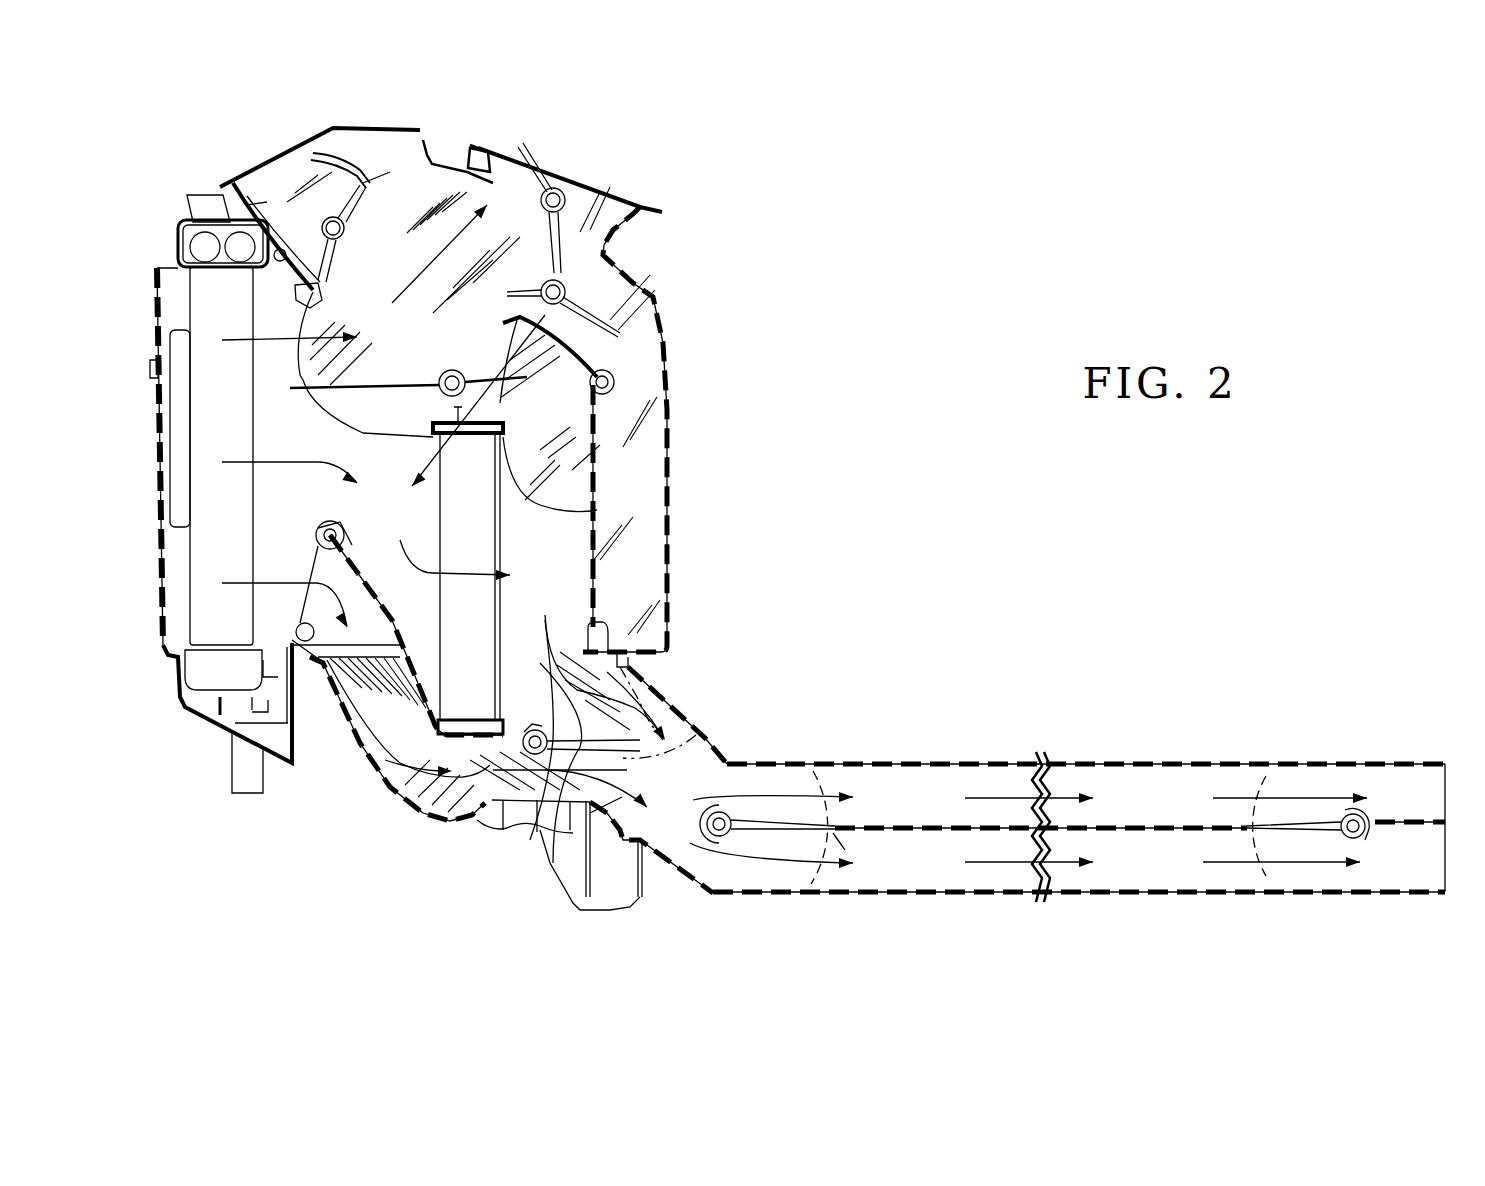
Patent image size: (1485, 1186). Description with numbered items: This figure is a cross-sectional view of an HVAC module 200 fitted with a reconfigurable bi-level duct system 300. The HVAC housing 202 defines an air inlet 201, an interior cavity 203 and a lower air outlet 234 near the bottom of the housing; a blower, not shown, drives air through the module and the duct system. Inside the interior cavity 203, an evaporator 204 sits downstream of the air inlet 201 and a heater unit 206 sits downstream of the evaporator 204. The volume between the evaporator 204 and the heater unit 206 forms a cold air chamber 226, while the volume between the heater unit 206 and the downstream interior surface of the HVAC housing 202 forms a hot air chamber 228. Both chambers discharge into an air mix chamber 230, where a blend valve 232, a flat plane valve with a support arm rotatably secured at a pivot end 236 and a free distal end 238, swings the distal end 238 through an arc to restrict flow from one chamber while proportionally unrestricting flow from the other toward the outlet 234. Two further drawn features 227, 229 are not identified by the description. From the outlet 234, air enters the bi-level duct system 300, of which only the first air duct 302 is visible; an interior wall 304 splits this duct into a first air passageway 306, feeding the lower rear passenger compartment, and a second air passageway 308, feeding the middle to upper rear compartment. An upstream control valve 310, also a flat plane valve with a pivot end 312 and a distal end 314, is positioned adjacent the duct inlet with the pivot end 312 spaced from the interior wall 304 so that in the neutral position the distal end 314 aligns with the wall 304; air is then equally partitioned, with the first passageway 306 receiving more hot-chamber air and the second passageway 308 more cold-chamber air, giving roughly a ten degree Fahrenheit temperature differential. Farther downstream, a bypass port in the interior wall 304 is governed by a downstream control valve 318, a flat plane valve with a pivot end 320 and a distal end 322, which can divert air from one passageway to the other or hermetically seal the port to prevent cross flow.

The HVAC module 200 is at (748, 205).
The air inlet 201 is at (178, 427).
The HVAC housing 202 is at (158, 633).
The interior cavity 203 is at (497, 408).
The evaporator 204 is at (205, 312).
The heater unit 206 is at (473, 528).
The cold air chamber 226 is at (277, 412).
The bypass duct 227 is at (388, 748).
The hot air chamber 228 is at (560, 582).
The outlet passage 229 is at (530, 840).
The air mix chamber 230 is at (655, 722).
The blend valve 232 is at (553, 863).
The lower air outlet 234 is at (668, 750).
The pivot end 236 is at (528, 735).
The distal end 238 is at (640, 750).
The bi-level duct system 300 is at (1347, 910).
The first air duct 302 is at (693, 787).
The interior wall 304 is at (940, 830).
The first air passageway 306 is at (1152, 787).
The second air passageway 308 is at (1153, 870).
The upstream control valve 310 is at (802, 820).
The pivot end 312 is at (728, 832).
The distal end 314 is at (835, 835).
The downstream control valve 318 is at (1363, 812).
The pivot end 320 is at (1307, 827).
The distal end 322 is at (1247, 830).